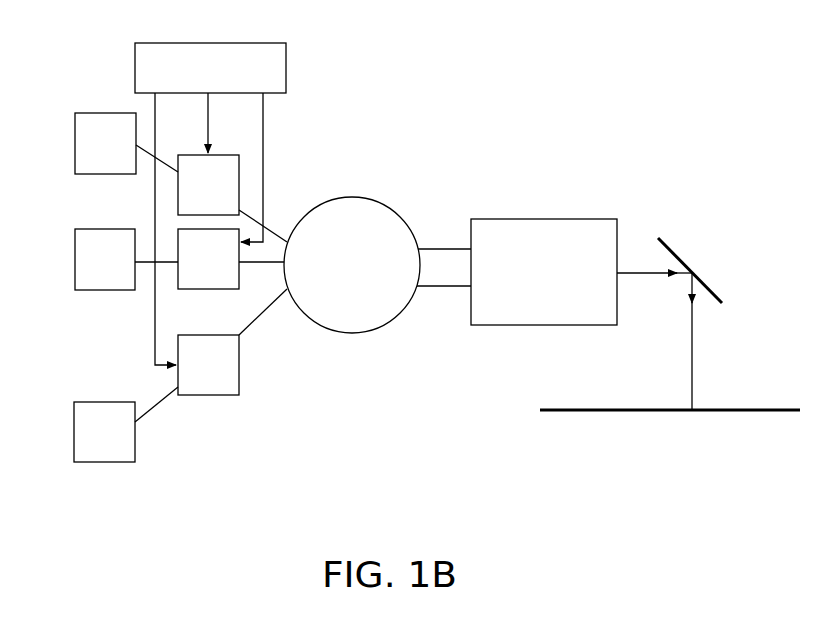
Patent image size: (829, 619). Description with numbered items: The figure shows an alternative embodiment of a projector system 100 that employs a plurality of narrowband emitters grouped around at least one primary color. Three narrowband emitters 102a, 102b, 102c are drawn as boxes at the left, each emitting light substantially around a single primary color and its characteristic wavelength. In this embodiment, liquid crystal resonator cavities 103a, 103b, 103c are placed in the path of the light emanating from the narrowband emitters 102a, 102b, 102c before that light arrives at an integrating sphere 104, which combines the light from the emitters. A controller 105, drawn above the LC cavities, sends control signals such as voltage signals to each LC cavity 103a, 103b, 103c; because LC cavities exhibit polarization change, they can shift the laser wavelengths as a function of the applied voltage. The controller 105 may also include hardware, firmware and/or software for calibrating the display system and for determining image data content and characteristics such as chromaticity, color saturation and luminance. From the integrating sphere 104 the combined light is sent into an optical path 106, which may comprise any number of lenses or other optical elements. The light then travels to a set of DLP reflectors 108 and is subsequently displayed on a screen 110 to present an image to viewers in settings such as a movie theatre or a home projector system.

The projector system 100 is at (424, 144).
The narrowband emitter 102a is at (75, 148).
The narrowband emitter 102b is at (75, 267).
The narrowband emitter 102c is at (74, 437).
The liquid crystal resonator cavity 103a is at (232, 197).
The liquid crystal resonator cavity 103b is at (232, 271).
The liquid crystal resonator cavity 103c is at (232, 379).
The integrating sphere 104 is at (338, 333).
The controller 105 is at (286, 60).
The optical path 106 is at (543, 219).
The DLP reflectors 108 is at (703, 278).
The screen 110 is at (717, 410).